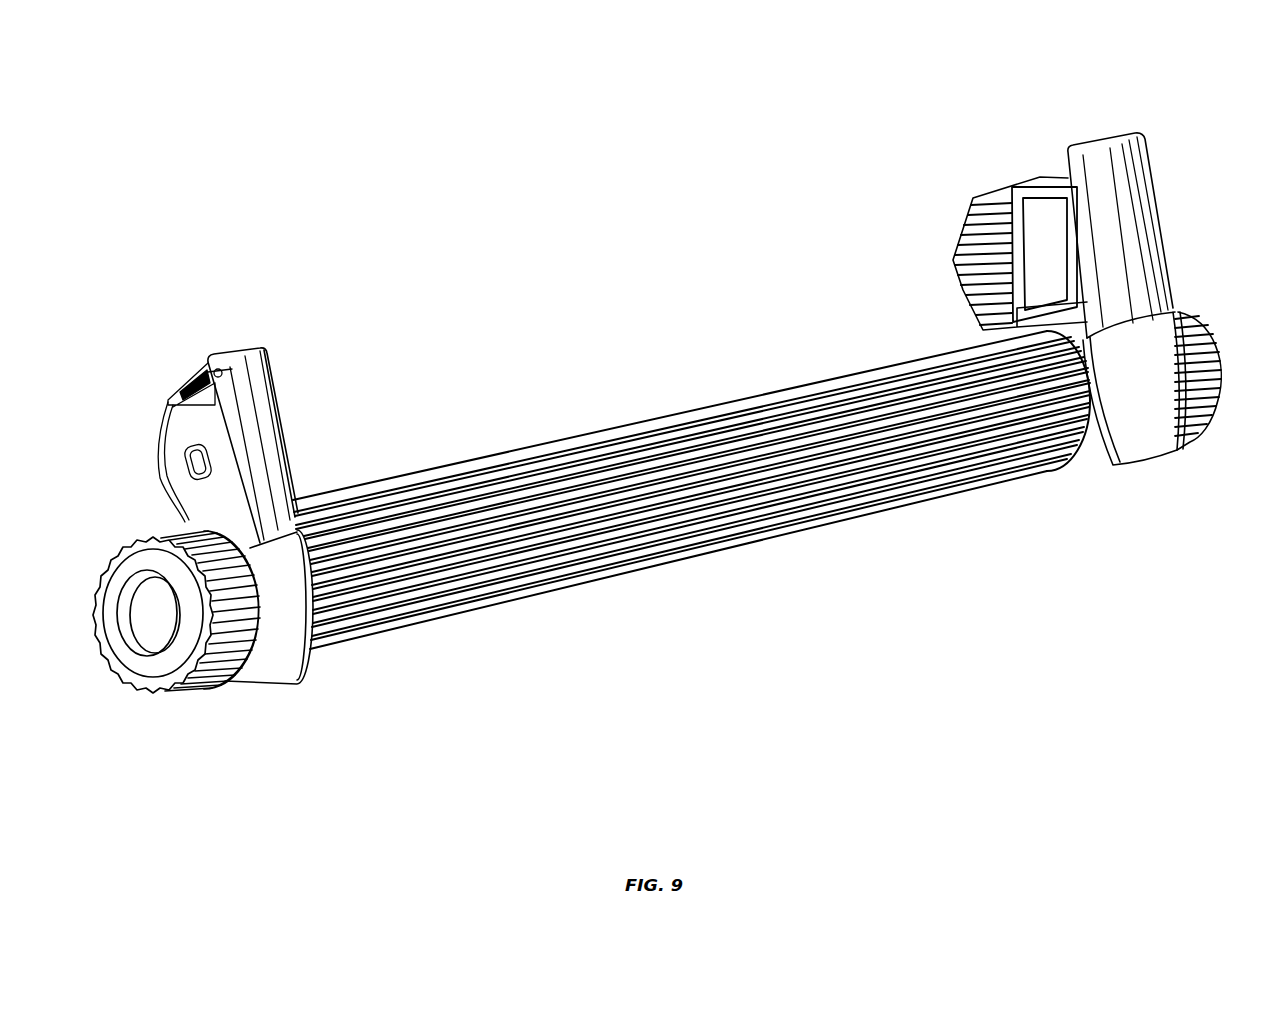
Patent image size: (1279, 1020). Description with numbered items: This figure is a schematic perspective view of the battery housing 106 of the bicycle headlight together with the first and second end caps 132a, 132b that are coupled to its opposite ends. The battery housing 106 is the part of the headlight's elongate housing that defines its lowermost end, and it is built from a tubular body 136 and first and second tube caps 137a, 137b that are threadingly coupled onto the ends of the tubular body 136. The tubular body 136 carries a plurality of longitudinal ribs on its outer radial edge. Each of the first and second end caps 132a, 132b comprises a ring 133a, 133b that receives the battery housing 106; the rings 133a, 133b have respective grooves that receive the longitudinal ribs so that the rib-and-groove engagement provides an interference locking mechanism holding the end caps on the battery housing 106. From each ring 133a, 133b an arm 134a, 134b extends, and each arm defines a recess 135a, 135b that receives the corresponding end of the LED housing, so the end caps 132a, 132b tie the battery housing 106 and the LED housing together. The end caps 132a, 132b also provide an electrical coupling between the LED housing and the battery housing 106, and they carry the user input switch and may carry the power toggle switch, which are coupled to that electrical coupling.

The battery housing 106 is at (832, 521).
The first end cap 132a is at (212, 353).
The second end cap 132b is at (1138, 134).
The ring 133a is at (272, 637).
The ring 133b is at (1140, 417).
The arm 134a is at (175, 447).
The arm 134b is at (1150, 247).
The recess 135a is at (278, 408).
The recess 135b is at (1045, 217).
The tubular body 136 is at (648, 442).
The first tube cap 137a is at (178, 658).
The second tube cap 137b is at (1205, 420).